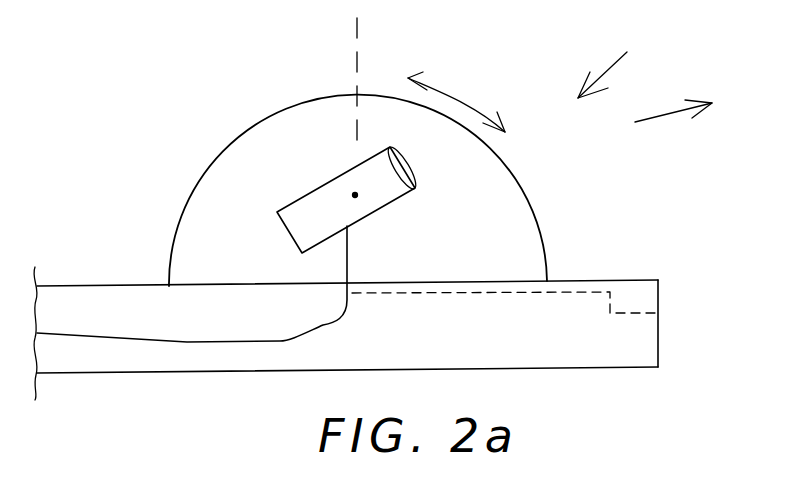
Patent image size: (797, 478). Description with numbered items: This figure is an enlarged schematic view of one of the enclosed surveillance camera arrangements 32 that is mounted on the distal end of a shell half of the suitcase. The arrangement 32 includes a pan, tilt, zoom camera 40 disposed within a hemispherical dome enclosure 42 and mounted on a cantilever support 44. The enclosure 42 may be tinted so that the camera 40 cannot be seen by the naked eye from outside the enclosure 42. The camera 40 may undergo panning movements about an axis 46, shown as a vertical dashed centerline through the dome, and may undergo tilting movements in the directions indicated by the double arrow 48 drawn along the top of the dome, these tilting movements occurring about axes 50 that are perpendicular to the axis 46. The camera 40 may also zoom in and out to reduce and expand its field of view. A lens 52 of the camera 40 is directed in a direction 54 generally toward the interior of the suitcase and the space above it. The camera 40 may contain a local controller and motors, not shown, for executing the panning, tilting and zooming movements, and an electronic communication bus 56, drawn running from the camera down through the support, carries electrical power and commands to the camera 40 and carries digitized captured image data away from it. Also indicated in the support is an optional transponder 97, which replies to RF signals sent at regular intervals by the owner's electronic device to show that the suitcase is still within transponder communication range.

The enclosed surveillance camera arrangement 32 is at (632, 63).
The pan, tilt, zoom camera 40 is at (330, 205).
The hemispherical dome enclosure 42 is at (535, 212).
The cantilever support 44 is at (566, 348).
The axis 46 is at (353, 70).
The double arrow 48 is at (467, 97).
The axes 50 is at (358, 196).
The lens 52 is at (407, 163).
The direction 54 is at (667, 117).
The electronic communication bus 56 is at (167, 343).
The transponder 97 is at (658, 283).